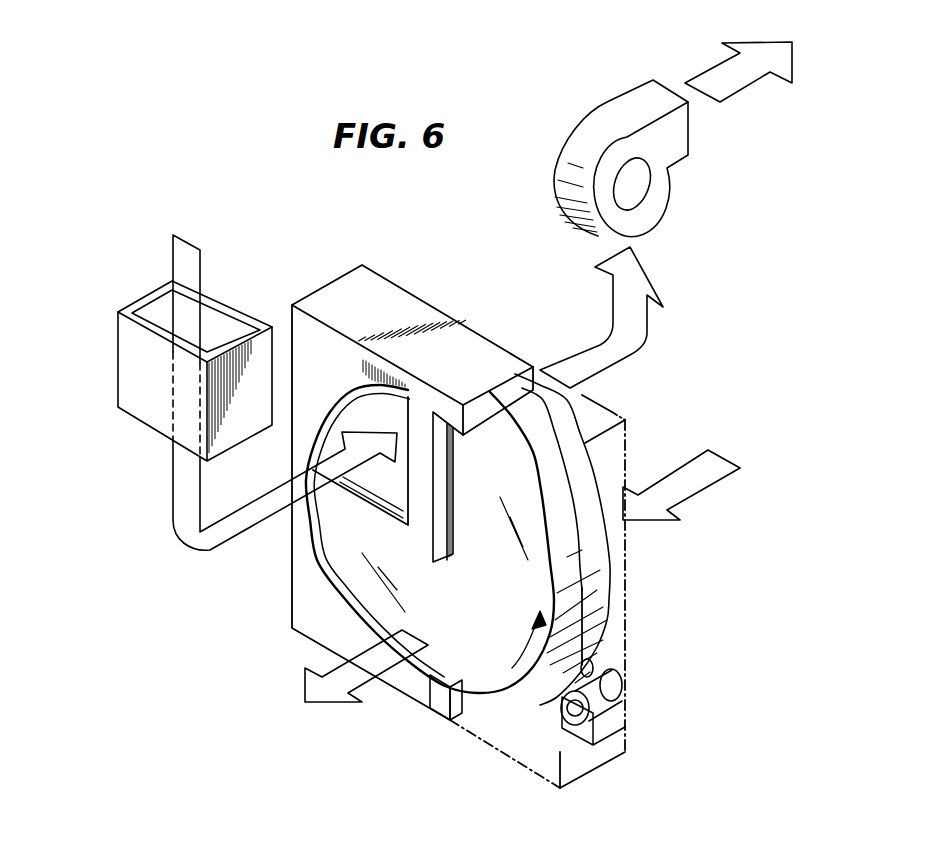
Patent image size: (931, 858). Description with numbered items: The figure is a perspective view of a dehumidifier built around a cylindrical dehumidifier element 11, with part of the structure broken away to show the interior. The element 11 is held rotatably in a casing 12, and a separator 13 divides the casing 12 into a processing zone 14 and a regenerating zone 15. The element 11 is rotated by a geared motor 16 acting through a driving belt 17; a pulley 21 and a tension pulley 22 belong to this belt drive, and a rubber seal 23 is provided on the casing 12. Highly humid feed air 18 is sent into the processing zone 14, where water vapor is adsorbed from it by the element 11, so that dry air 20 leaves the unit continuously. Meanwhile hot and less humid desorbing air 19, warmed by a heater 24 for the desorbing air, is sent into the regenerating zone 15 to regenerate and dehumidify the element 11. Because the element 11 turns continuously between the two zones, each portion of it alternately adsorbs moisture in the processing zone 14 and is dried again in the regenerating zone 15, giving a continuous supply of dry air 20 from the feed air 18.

The cylindrical dehumidifier element 11 is at (555, 430).
The casing 12 is at (403, 298).
The separator 13 is at (378, 522).
The processing zone 14 is at (472, 678).
The regenerating zone 15 is at (357, 402).
The geared motor 16 is at (607, 700).
The driving belt 17 is at (582, 590).
The feed air 18 is at (685, 477).
The desorbing air 19 is at (177, 515).
The dry air 20 is at (355, 676).
The pulley 21 is at (573, 717).
The tension pulley 22 is at (592, 663).
The rubber seal 23 is at (437, 678).
The heater 24 is at (118, 346).